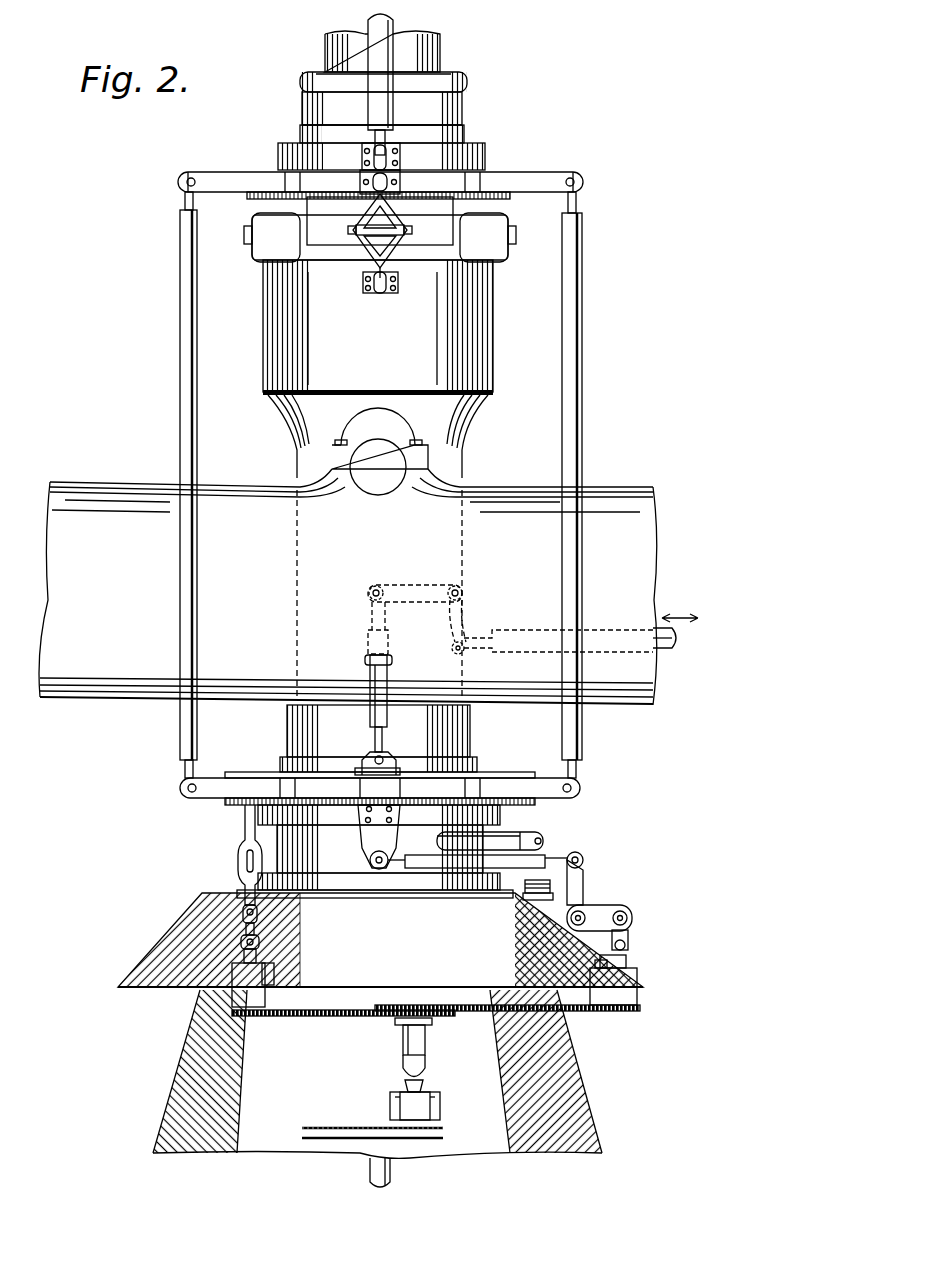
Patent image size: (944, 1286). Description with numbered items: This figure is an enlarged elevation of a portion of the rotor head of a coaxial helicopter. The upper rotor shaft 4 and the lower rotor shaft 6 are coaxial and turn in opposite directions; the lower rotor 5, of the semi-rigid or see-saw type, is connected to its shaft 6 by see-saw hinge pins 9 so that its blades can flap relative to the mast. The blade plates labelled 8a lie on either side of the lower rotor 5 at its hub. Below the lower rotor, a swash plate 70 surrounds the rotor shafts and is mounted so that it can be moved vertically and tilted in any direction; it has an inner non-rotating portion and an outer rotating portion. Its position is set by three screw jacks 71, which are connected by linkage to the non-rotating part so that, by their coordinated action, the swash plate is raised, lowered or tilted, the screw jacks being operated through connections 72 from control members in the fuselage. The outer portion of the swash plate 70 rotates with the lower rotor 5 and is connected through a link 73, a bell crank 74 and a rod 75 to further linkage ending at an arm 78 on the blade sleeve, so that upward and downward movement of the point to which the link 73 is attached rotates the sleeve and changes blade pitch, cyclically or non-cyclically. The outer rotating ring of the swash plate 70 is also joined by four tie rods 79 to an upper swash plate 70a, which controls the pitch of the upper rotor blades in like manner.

The upper rotor shaft 4 is at (440, 53).
The lower rotor 5 is at (606, 484).
The lower rotor shaft 6 is at (466, 451).
The table plates 8a is at (122, 587).
The see-saw hinge pins 9 is at (383, 452).
The swash plate 70 is at (495, 777).
The swash plate 70a is at (528, 178).
The screw jacks 71 is at (553, 892).
The connections 72 is at (354, 1017).
The link 73 is at (388, 686).
The bell crank 74 is at (466, 616).
The rod 75 is at (665, 650).
The arm 78 is at (582, 345).
The tie rods 79 is at (180, 338).